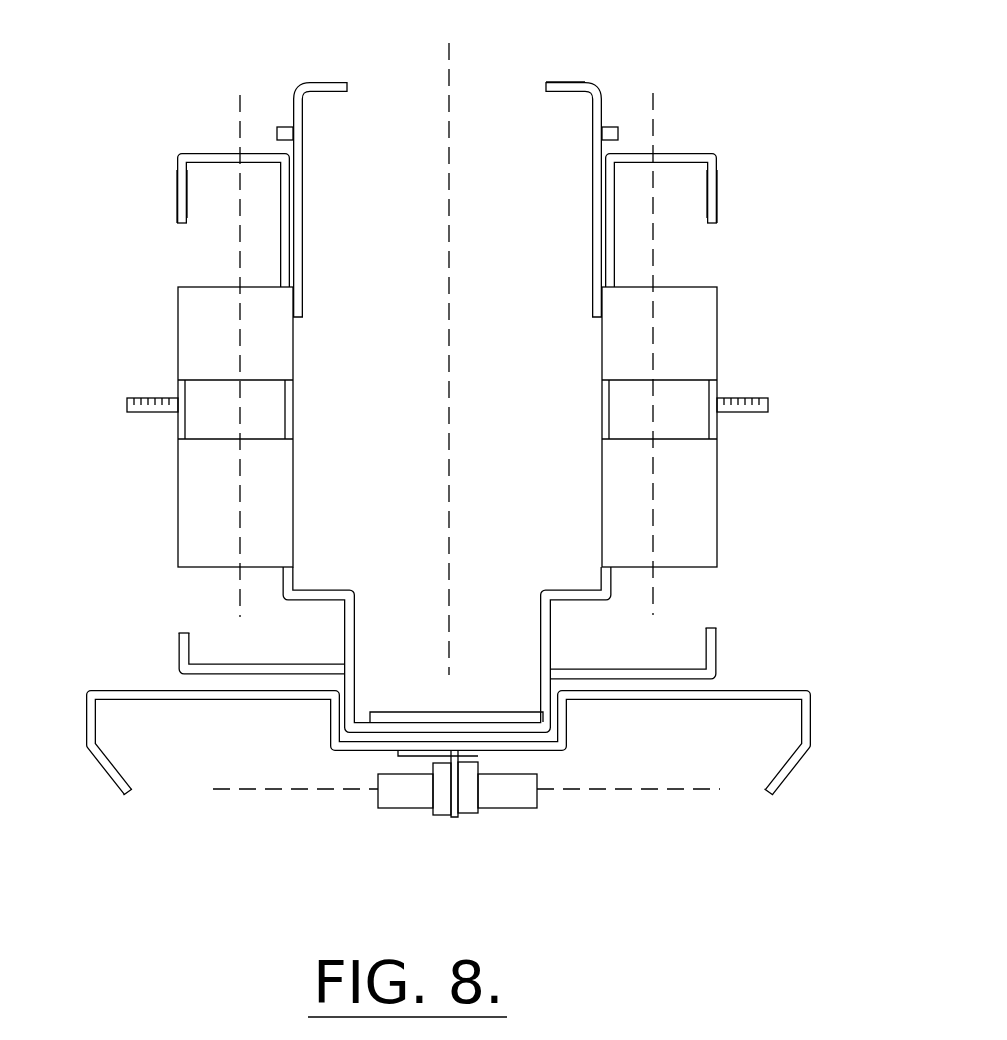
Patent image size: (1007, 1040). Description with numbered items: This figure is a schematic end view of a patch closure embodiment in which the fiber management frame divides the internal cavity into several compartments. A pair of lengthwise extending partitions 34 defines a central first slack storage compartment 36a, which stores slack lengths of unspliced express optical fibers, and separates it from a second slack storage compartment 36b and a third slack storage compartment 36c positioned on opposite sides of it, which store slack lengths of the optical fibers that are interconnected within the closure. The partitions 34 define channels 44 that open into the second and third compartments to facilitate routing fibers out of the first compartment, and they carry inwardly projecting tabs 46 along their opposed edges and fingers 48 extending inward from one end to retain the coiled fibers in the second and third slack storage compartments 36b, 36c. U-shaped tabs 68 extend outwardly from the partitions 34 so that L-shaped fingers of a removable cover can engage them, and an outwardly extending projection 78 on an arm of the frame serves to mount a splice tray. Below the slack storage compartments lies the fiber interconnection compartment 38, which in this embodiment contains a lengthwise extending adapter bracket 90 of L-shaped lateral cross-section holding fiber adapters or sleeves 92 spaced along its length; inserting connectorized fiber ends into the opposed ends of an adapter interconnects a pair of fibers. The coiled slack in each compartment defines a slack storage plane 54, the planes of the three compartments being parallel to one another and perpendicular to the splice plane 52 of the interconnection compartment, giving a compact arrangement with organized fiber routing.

The partitions 34 is at (303, 181).
The first slack storage compartment 36a is at (561, 143).
The second slack storage compartment 36b is at (683, 183).
The third slack storage compartment 36c is at (205, 188).
The fiber interconnection compartment 38 is at (755, 737).
The channels 44 is at (565, 636).
The tabs 46 is at (178, 188).
The fingers 48 is at (178, 453).
The splice plane 52 is at (633, 789).
The slack storage plane 54 is at (238, 512).
The U-shaped tabs 68 is at (277, 133).
The outwardly extending projection 78 is at (145, 398).
The adapter bracket 90 is at (453, 813).
The fiber adapters 92 is at (470, 797).